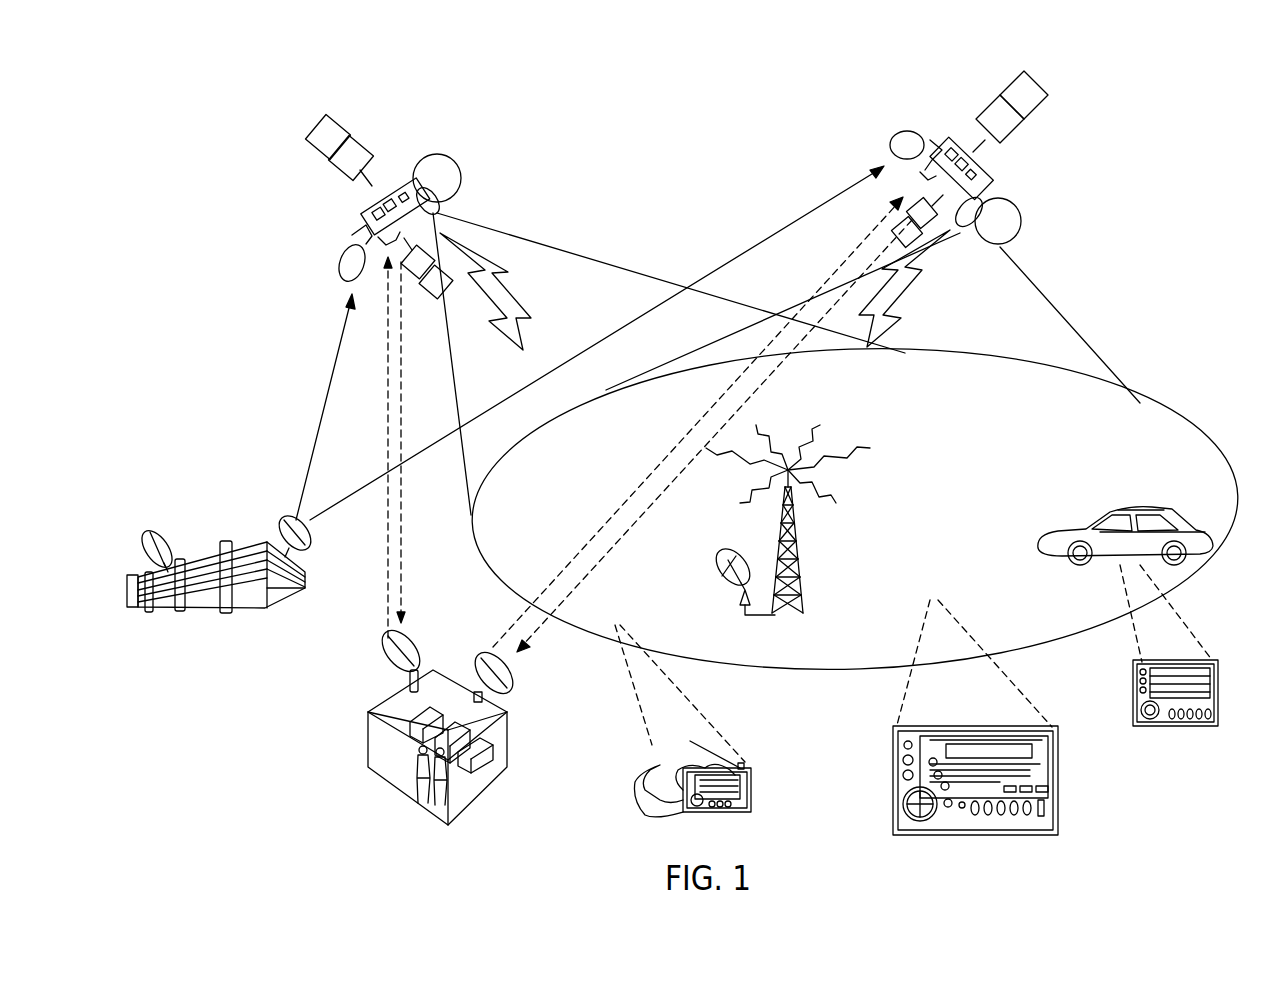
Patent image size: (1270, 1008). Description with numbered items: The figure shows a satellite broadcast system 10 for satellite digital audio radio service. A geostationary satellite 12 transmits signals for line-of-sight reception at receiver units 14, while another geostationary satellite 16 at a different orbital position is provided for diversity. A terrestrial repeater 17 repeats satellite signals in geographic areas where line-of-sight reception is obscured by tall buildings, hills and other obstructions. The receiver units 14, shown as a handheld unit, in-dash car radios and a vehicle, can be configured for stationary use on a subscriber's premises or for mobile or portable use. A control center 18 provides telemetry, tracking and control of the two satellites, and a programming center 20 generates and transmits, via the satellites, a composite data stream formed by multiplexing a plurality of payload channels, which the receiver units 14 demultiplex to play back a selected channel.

The satellite broadcast system 10 is at (1145, 233).
The geostationary satellite 12 is at (461, 173).
The receiver units 14 is at (911, 410).
The geostationary satellite 16 is at (1018, 220).
The terrestrial repeater 17 is at (798, 573).
The control center 18 is at (508, 742).
The programming center 20 is at (307, 589).